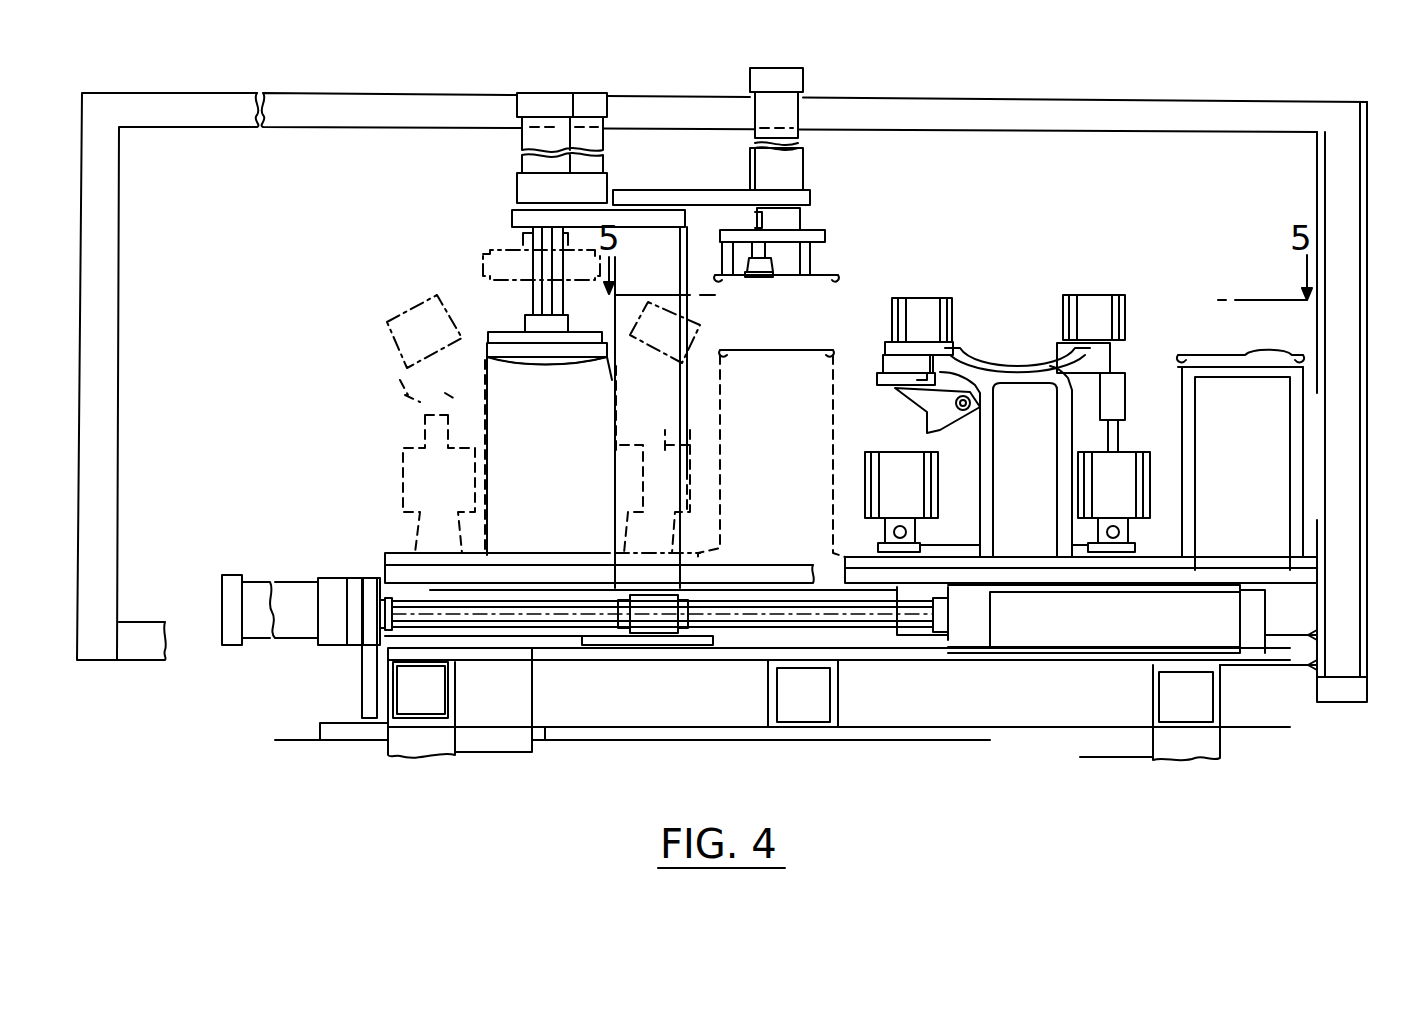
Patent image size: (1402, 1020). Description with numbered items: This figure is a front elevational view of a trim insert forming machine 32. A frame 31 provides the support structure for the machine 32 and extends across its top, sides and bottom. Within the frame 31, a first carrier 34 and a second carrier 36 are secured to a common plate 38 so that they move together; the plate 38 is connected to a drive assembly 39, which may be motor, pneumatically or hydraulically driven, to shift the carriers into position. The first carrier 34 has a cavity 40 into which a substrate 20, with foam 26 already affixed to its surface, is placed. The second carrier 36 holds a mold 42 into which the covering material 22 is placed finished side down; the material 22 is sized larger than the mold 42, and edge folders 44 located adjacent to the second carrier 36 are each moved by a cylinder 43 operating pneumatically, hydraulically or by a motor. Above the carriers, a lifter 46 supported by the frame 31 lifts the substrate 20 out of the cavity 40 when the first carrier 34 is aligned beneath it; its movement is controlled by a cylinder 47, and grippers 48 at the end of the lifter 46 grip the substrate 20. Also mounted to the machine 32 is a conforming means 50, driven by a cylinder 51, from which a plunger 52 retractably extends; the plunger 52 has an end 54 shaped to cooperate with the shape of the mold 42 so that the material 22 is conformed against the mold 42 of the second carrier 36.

The substrate 20 is at (836, 276).
The material 22 is at (1012, 362).
The foam 26 is at (1260, 355).
The frame 31 is at (105, 98).
The machine 32 is at (346, 95).
The first carrier 34 is at (720, 422).
The second carrier 36 is at (483, 416).
The plate 38 is at (386, 554).
The drive assembly 39 is at (915, 625).
The cavity 40 is at (1215, 366).
The mold 42 is at (968, 346).
The cylinder 43 is at (892, 313).
The edge folders 44 is at (920, 298).
The lifter 46 is at (822, 185).
The cylinder 47 is at (803, 110).
The grippers 48 is at (778, 262).
The conforming means 50 is at (553, 209).
The cylinder 51 is at (607, 110).
The plunger 52 is at (487, 345).
The end 54 is at (555, 362).